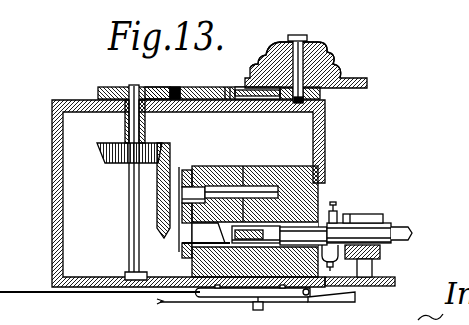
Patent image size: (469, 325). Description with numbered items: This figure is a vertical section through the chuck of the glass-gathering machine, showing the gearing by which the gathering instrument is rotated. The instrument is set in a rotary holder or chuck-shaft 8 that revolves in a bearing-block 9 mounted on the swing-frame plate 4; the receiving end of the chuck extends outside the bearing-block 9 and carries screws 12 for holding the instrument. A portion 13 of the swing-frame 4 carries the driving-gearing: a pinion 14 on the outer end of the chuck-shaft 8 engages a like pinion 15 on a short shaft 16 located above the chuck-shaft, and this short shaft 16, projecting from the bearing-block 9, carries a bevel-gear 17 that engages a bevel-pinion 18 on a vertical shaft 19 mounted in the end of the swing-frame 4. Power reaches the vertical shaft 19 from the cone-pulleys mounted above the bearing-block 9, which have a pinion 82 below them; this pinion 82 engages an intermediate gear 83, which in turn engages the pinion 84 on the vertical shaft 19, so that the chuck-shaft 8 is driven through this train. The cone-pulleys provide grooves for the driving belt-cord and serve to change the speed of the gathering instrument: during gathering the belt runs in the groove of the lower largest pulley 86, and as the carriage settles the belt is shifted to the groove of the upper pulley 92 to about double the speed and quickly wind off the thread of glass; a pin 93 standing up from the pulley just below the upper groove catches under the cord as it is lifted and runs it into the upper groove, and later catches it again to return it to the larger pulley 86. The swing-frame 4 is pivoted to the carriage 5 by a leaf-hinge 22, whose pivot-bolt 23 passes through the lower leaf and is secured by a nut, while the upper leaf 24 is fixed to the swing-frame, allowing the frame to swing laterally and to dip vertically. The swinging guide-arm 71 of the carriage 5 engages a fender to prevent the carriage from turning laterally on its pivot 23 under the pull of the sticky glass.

The swing-frame plate 4 is at (378, 285).
The carriage 5 is at (256, 296).
The chuck-shaft 8 is at (297, 234).
The bearing-block 9 is at (295, 166).
The screws 12 is at (334, 205).
The portion of the swing-frame 13 is at (63, 200).
The pinion 14 is at (182, 250).
The pinion 15 is at (193, 177).
The short shaft 16 is at (176, 183).
The bevel-gear 17 is at (180, 150).
The bevel-pinion 18 is at (118, 145).
The vertical shaft 19 is at (130, 247).
The leaf-hinge 22 is at (222, 297).
The pivot-bolt 23 is at (256, 310).
The upper leaf 24 is at (305, 296).
The swinging guide-arm 71 is at (100, 280).
The pinion 82 is at (318, 96).
The intermediate gear 83 is at (207, 89).
The pinion 84 is at (160, 88).
The lower largest pulley 86 is at (338, 70).
The upper pulley 92 is at (325, 45).
The pin 93 is at (338, 61).